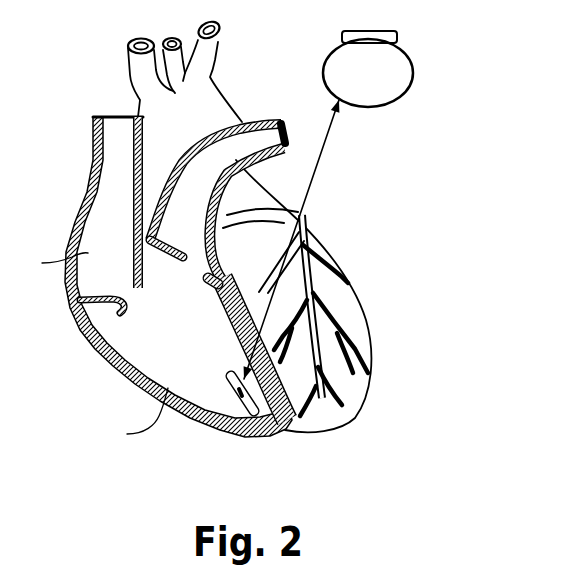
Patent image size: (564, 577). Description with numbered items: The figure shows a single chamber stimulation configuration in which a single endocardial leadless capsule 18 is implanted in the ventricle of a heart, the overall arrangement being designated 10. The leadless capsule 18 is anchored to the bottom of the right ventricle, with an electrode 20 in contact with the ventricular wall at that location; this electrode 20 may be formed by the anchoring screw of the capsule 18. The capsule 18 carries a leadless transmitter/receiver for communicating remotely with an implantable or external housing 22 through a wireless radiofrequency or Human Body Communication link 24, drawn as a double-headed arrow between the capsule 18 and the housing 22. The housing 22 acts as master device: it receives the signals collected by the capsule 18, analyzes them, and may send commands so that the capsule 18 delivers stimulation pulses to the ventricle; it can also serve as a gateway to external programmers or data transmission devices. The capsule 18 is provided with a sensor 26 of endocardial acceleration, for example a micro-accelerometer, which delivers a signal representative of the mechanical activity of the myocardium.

The cardiac pacing system 10 is at (225, 257).
The leadless capsule 18 is at (228, 384).
The electrode 20 is at (237, 435).
The housing 22 is at (398, 82).
The link 24 is at (322, 152).
The sensor of endocardial acceleration 26 is at (283, 432).